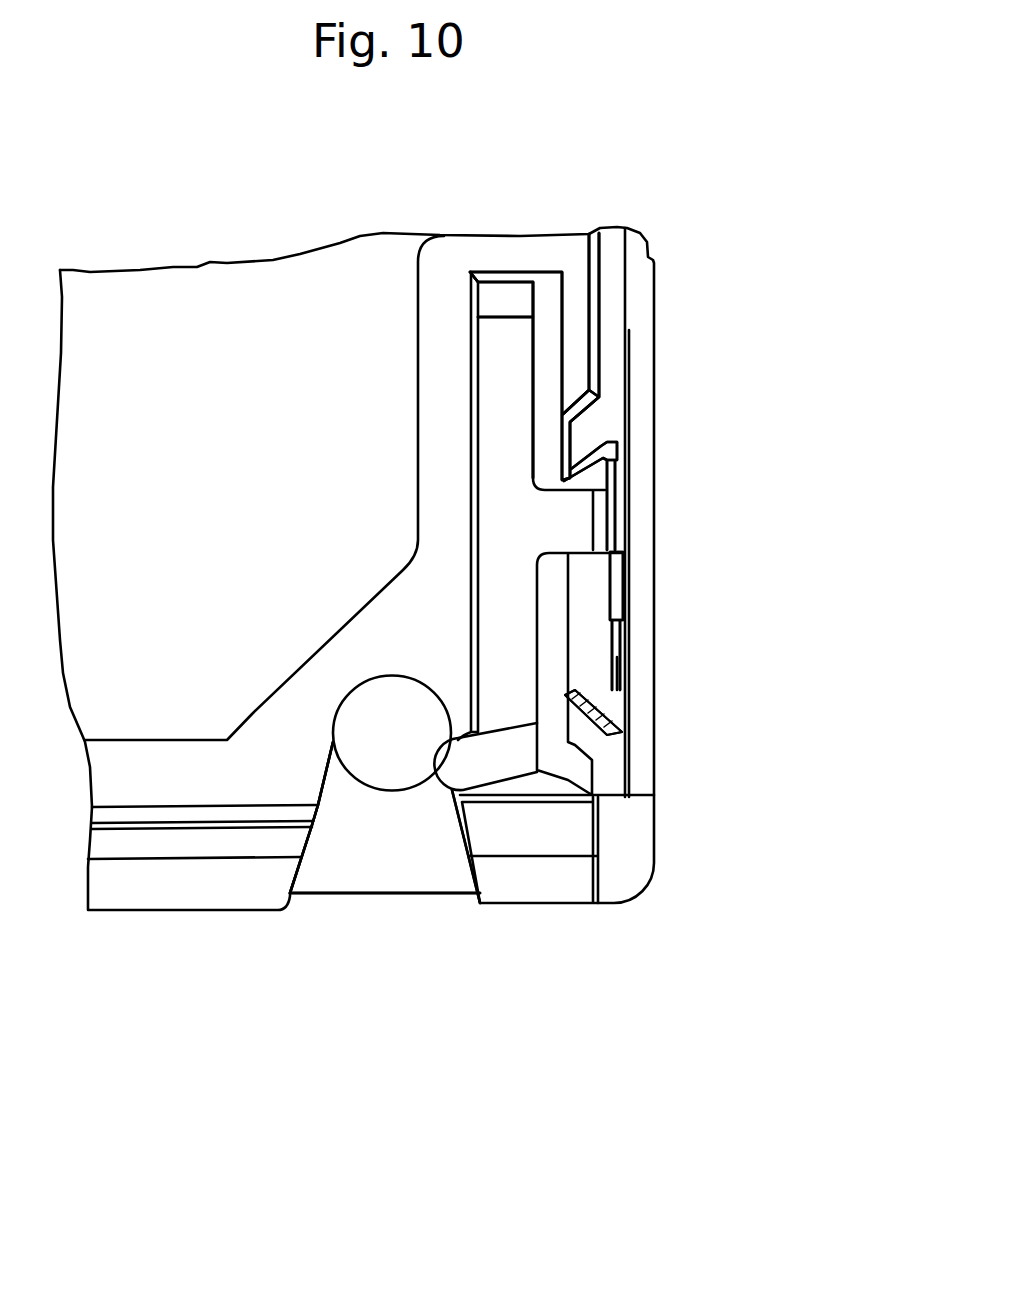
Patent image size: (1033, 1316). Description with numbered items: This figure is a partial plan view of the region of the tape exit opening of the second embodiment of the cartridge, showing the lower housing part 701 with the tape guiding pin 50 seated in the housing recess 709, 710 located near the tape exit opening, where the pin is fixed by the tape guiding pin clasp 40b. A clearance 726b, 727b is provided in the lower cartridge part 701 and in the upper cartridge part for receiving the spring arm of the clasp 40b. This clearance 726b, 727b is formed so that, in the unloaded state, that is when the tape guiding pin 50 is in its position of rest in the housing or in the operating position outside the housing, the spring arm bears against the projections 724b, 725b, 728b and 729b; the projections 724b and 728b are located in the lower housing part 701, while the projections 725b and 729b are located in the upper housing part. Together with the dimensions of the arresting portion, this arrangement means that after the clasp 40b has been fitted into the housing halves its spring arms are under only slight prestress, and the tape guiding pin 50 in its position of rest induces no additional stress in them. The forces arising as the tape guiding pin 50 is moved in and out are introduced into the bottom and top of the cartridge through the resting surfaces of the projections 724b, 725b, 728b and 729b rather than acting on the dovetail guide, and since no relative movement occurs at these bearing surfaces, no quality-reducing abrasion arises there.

The lower housing part 701 is at (135, 683).
The housing recess 709 is at (344, 858).
The recess 710 is at (385, 954).
The tape guiding pin 50 is at (407, 755).
The tape guiding pin clasp 40b is at (512, 517).
The projection 728b is at (472, 305).
The projection 729b is at (686, 356).
The clearance 726b is at (553, 591).
The clearance 727b is at (733, 566).
The projection 724b is at (477, 708).
The projection 725b is at (739, 732).